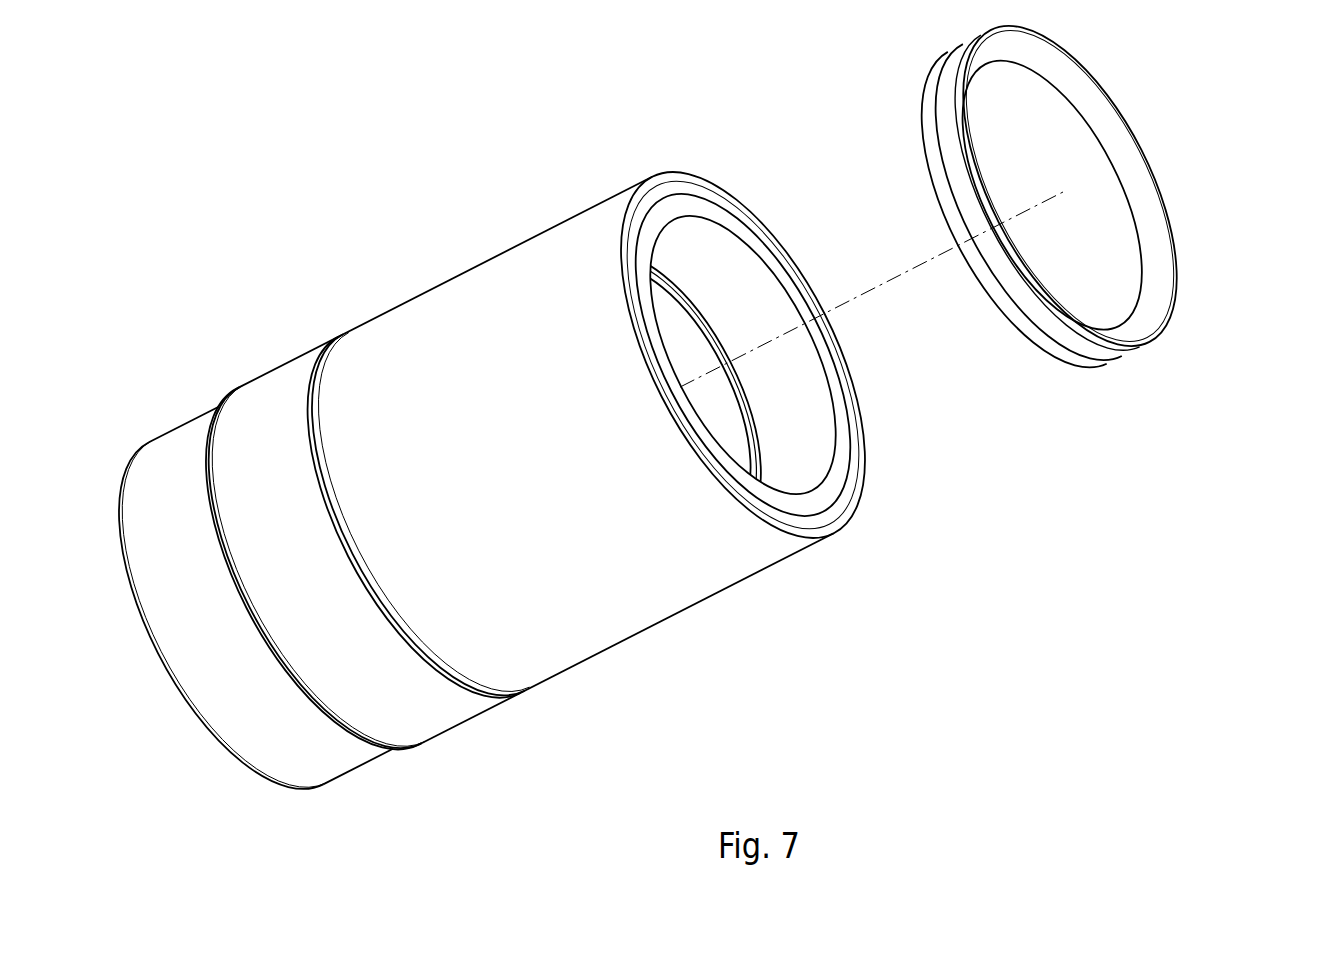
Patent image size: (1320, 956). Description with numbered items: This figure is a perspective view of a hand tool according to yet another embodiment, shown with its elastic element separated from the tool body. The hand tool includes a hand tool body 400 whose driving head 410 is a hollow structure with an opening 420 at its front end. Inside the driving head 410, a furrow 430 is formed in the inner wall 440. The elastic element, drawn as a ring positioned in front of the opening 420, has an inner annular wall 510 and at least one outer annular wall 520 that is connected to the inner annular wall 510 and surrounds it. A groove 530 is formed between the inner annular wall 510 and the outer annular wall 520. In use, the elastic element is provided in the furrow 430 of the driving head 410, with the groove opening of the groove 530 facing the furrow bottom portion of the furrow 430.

The hand tool body 400 is at (270, 302).
The driving head 410 is at (715, 565).
The opening 420 is at (762, 299).
The furrow 430 is at (767, 430).
The inner wall 440 is at (816, 462).
The inner annular wall 510 is at (1130, 199).
The outer annular wall 520 is at (979, 33).
The groove 530 is at (1046, 333).